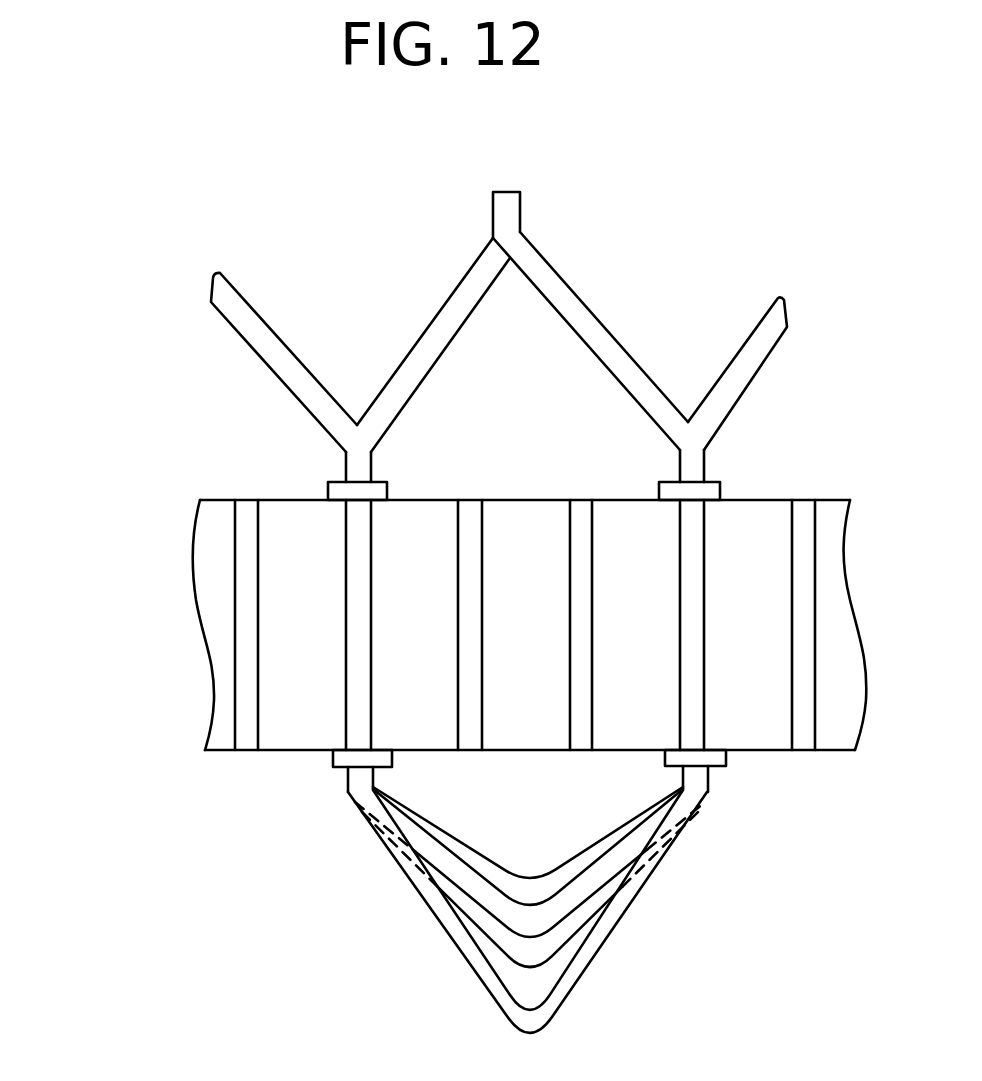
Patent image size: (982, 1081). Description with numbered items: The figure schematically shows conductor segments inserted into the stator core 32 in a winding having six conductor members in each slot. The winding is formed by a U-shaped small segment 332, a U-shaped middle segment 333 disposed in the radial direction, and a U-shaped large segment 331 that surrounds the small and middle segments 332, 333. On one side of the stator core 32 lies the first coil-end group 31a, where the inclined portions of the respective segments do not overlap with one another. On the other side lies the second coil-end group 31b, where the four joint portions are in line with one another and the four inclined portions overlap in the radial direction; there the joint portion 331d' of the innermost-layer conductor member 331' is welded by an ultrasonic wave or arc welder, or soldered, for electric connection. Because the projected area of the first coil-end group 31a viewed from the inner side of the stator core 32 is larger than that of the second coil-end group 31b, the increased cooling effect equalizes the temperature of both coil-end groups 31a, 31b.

The stator core 32 is at (760, 735).
The U-shaped large segment 331 is at (507, 668).
The conductor member of the innermost layer 331' is at (590, 341).
The joint portion of the innermost-layer conductor member 331d' is at (507, 179).
The U-shaped small segment 332 is at (432, 328).
The U-shaped middle segment 333 is at (563, 932).
The first coil-end group 31a is at (142, 763).
The second coil-end group 31b is at (132, 175).